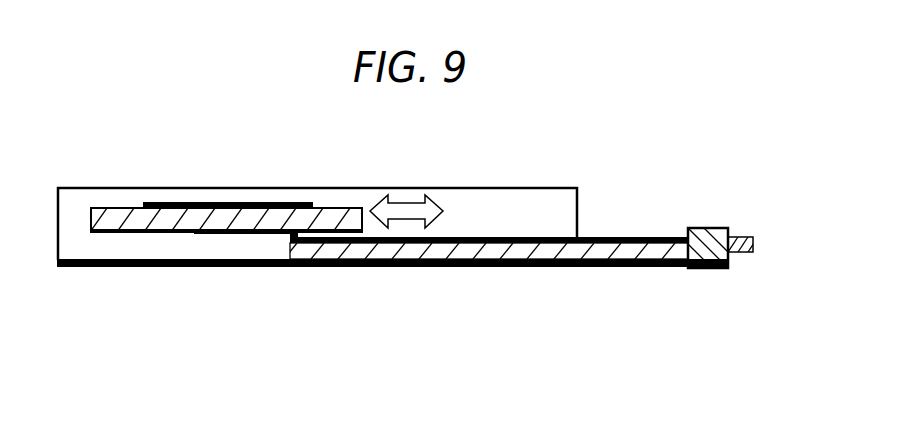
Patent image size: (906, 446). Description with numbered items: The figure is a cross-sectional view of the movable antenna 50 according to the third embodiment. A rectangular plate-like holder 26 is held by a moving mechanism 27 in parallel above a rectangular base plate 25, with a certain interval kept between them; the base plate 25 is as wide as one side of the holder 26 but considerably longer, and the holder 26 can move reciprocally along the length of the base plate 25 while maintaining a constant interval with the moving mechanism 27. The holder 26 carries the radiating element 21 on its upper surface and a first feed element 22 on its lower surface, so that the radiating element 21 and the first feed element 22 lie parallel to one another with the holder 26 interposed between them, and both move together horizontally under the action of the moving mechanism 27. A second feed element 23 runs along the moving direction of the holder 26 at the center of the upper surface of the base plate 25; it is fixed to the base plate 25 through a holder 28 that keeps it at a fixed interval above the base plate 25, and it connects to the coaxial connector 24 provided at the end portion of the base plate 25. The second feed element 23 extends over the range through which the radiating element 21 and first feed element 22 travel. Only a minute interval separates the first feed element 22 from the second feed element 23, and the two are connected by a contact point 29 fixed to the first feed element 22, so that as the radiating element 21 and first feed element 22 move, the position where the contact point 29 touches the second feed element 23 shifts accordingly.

The movable antenna 50 is at (410, 328).
The moving mechanism 27 is at (86, 187).
The holder 26 is at (123, 208).
The radiating element 21 is at (212, 202).
The first feed element 22 is at (227, 234).
The second feed element 23 is at (630, 237).
The coaxial connector 24 is at (737, 237).
The base plate 25 is at (137, 267).
The holder 28 is at (522, 250).
The contact point 29 is at (290, 236).